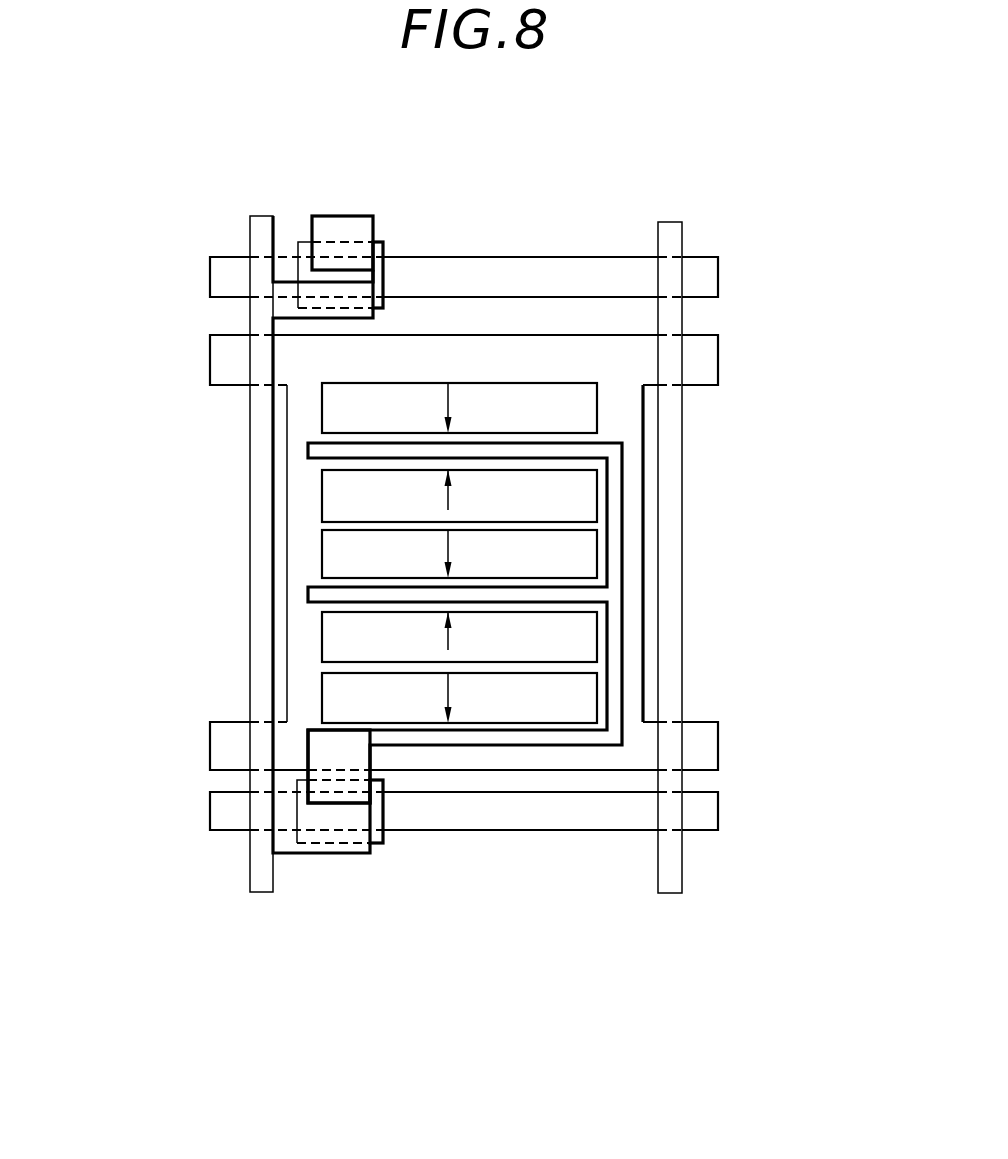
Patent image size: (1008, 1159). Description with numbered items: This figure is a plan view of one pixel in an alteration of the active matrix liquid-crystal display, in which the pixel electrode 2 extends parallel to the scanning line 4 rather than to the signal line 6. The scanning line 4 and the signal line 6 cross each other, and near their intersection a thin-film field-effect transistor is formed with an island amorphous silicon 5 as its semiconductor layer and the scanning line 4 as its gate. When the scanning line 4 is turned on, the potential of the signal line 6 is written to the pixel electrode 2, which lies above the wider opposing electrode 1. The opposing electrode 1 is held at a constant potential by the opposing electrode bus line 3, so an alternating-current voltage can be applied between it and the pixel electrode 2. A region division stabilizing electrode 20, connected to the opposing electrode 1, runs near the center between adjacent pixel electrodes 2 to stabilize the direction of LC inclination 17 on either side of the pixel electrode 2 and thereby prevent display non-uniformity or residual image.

The opposing electrode 1 is at (570, 433).
The pixel electrode 2 is at (580, 588).
The opposing electrode bus line 3 is at (717, 727).
The scanning line 4 is at (718, 278).
The island amorphous silicon 5 is at (387, 243).
The signal line 6 is at (265, 892).
The direction of LC inclination 17 is at (427, 493).
The region division stabilizing electrode 20 is at (557, 518).